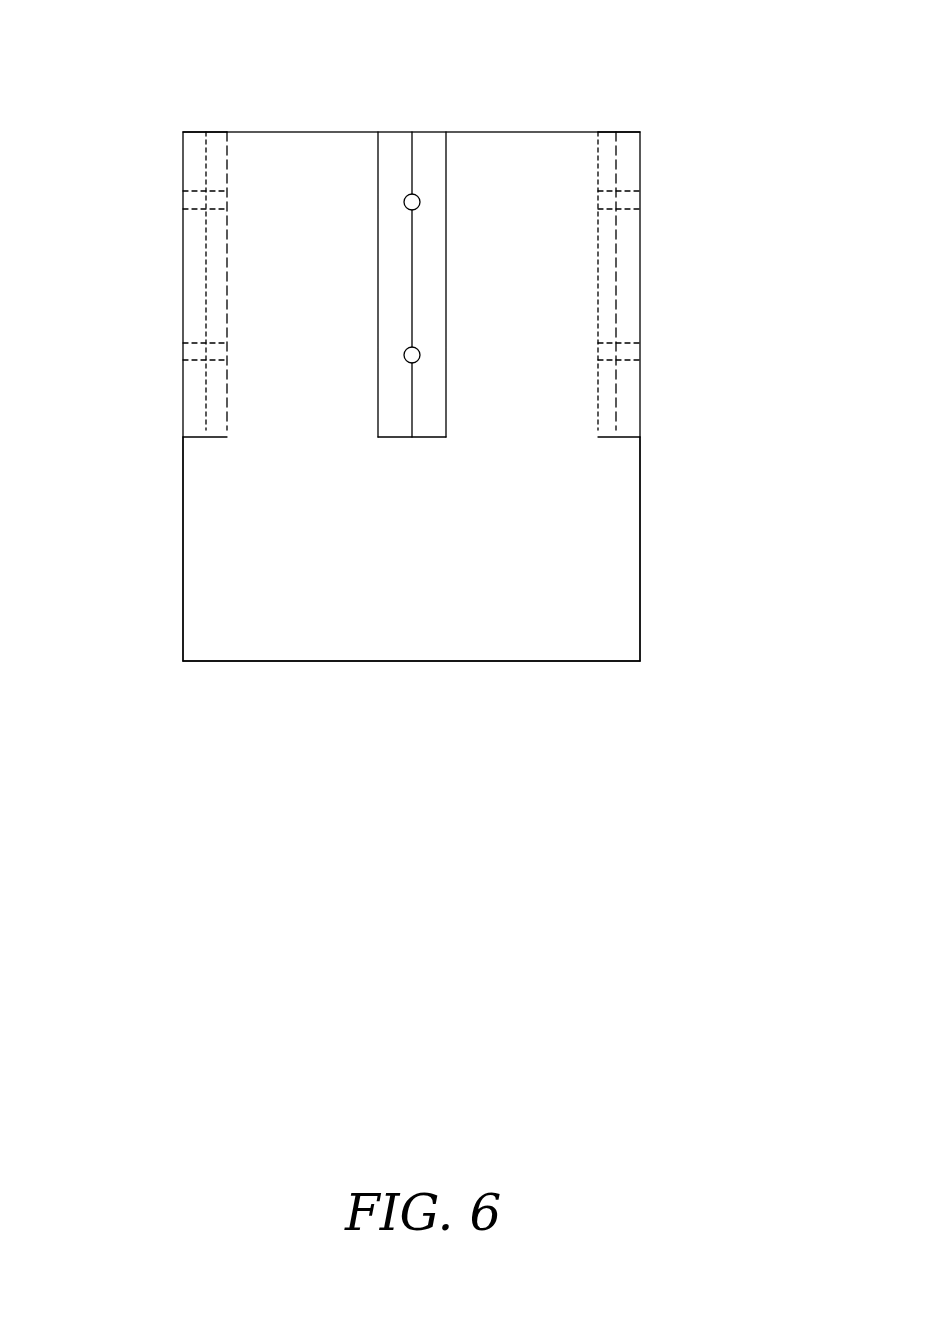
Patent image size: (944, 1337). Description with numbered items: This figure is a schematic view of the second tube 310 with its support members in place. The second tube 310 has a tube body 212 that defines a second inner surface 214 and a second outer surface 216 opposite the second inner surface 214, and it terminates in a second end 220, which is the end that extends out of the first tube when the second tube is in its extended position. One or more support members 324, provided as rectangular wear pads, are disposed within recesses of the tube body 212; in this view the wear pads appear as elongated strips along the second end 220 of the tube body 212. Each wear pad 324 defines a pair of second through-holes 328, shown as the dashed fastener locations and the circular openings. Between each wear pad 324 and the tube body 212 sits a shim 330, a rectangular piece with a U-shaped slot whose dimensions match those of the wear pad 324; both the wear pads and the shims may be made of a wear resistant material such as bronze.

The second tube 310 is at (690, 58).
The second end 220 is at (162, 108).
The support member 324 is at (430, 165).
The second through-hole 328 is at (180, 202).
The shim 330 is at (217, 153).
The tube body 212 is at (123, 583).
The second inner surface 214 is at (196, 484).
The second outer surface 216 is at (640, 543).